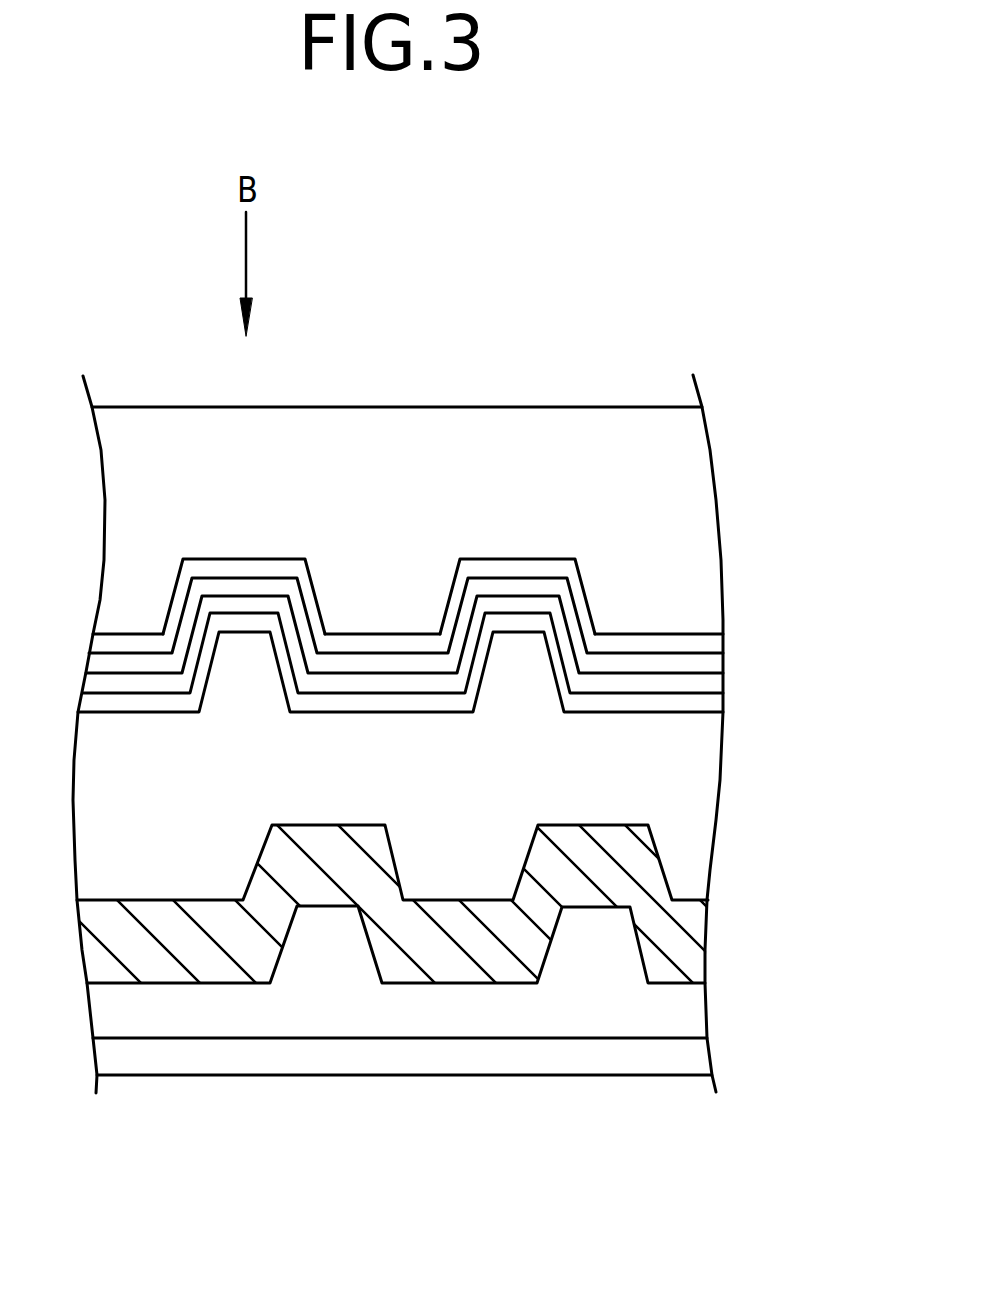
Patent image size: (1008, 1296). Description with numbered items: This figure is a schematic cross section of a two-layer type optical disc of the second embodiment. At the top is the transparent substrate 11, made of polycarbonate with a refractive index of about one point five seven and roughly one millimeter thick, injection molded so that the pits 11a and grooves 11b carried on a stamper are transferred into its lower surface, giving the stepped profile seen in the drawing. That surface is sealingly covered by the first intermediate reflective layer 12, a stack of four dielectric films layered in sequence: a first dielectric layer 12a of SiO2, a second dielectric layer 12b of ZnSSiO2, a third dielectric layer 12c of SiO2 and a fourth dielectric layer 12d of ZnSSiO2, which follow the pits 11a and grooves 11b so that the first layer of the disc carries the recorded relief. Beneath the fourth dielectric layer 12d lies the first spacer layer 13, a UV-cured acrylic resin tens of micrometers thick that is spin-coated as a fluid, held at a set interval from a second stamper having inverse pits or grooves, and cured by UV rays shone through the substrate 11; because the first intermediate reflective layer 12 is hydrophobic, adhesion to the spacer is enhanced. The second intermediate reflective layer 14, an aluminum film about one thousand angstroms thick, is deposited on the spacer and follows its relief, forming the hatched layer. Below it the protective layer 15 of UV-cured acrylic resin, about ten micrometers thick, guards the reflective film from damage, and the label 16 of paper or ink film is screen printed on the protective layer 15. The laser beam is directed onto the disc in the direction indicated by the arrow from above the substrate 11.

The transparent substrate 11 is at (692, 457).
The pits 11a is at (255, 560).
The grooves 11b is at (373, 634).
The first intermediate reflective layer 12 is at (476, 660).
The first dielectric layer 12a is at (650, 642).
The second dielectric layer 12b is at (668, 662).
The third dielectric layer 12c is at (673, 680).
The fourth dielectric layer 12d is at (660, 705).
The first spacer layer 13 is at (693, 832).
The second intermediate reflective layer 14 is at (703, 938).
The protective layer 15 is at (693, 1017).
The label 16 is at (670, 1065).